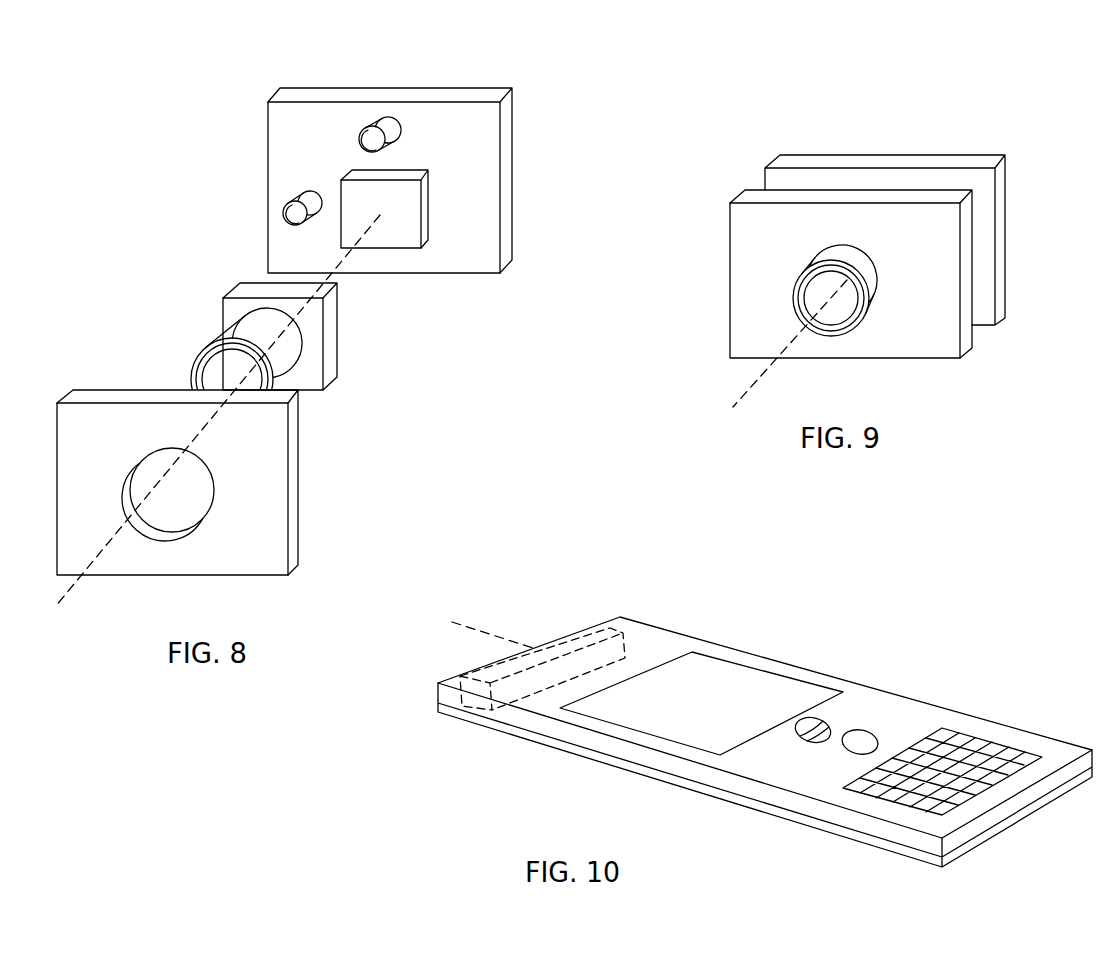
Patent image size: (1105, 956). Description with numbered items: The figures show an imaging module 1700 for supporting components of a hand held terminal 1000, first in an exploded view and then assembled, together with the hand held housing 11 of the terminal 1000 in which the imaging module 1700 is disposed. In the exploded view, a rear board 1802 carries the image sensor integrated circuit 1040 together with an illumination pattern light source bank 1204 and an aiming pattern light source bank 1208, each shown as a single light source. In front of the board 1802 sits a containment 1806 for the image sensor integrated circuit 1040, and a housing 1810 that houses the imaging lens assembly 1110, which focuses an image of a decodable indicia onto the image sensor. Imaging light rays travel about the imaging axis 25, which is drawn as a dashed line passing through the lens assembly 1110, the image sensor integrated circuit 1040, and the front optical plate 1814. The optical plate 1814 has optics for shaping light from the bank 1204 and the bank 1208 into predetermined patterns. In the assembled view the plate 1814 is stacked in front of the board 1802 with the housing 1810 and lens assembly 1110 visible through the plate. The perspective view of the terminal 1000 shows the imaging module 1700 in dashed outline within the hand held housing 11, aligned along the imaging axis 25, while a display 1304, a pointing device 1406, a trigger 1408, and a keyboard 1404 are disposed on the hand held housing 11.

In FIG. 10, the hand held housing 11 is at (1058, 752).
In FIG. 8, the imaging axis 25 is at (65, 588).
In FIG. 9, the imaging axis 25 is at (748, 392).
In FIG. 10, the imaging axis 25 is at (480, 630).
In FIG. 10, the terminal 1000 is at (685, 574).
In FIG. 8, the image sensor integrated circuit 1040 is at (425, 228).
In FIG. 8, the imaging lens assembly 1110 is at (213, 378).
In FIG. 9, the imaging lens assembly 1110 is at (802, 278).
In FIG. 8, the illumination pattern light source bank 1204 is at (292, 203).
In FIG. 8, the aiming pattern light source bank 1208 is at (373, 127).
In FIG. 10, the display 1304 is at (763, 659).
In FIG. 10, the keyboard 1404 is at (978, 737).
In FIG. 10, the pointing device 1406 is at (822, 718).
In FIG. 10, the trigger 1408 is at (870, 730).
In FIG. 8, the imaging module 1700 is at (509, 65).
In FIG. 9, the imaging module 1700 is at (1000, 90).
In FIG. 10, the imaging module 1700 is at (572, 643).
In FIG. 8, the back panel 1802 is at (490, 190).
In FIG. 9, the back panel 1802 is at (810, 177).
In FIG. 8, the containment 1806 is at (330, 358).
In FIG. 8, the housing 1810 is at (280, 375).
In FIG. 9, the housing 1810 is at (858, 260).
In FIG. 8, the optical plate 1814 is at (272, 533).
In FIG. 9, the optical plate 1814 is at (752, 212).